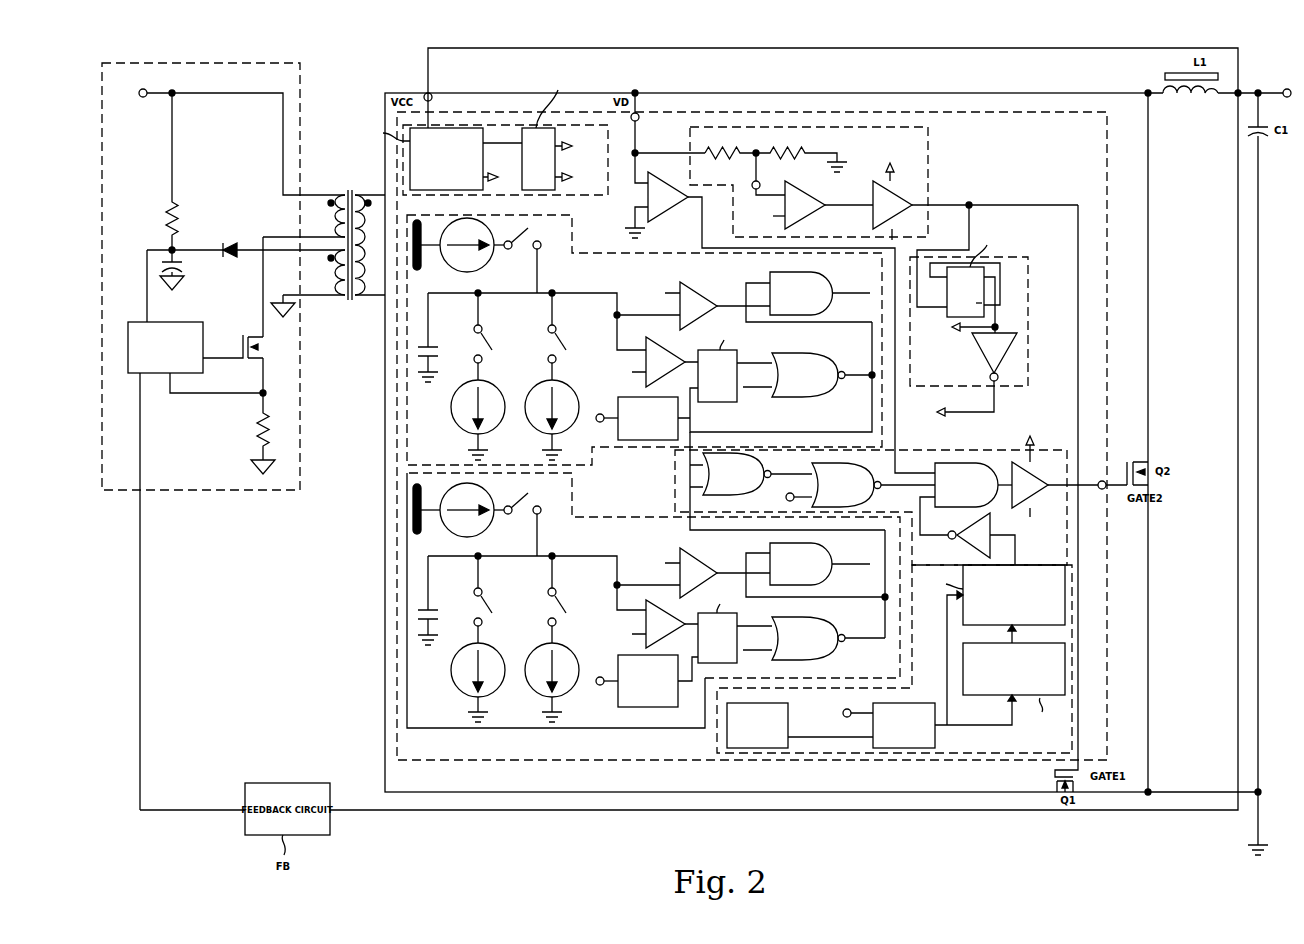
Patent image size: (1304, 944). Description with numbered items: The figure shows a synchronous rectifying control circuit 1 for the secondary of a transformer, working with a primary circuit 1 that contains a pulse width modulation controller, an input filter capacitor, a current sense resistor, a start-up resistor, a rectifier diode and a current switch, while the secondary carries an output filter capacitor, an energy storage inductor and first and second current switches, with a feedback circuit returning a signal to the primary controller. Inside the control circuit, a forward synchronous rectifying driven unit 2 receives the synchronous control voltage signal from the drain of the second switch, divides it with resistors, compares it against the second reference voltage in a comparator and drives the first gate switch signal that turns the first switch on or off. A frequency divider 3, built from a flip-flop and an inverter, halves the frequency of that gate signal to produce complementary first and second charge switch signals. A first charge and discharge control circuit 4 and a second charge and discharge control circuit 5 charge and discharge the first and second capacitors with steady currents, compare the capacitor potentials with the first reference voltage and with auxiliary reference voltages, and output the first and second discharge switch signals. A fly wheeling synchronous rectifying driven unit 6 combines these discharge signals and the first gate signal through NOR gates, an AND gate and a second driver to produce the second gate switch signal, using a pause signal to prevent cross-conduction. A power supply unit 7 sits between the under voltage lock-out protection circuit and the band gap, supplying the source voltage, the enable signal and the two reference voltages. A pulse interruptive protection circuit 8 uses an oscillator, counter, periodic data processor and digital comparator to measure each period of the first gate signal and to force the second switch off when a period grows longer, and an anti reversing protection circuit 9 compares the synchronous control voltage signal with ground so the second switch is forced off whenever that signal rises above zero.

The synchronous rectifying control circuit 1 is at (231, 63).
The forward synchronous rectifying driven unit 2 is at (928, 187).
The frequency divider 3 is at (1030, 386).
The first charge & discharge control circuit 4 is at (583, 253).
The second charge & discharge control circuit 5 is at (605, 517).
The fly wheeling synchronous rectifying driven unit 6 is at (965, 448).
The power supply unit 7 is at (514, 123).
The pulse interruptive protection circuit 8 is at (1072, 637).
The anti reversing protection circuit 9 is at (660, 218).